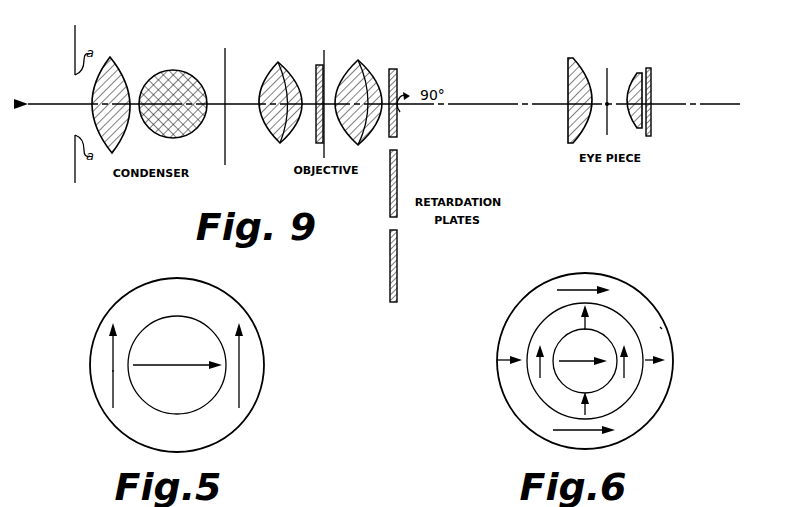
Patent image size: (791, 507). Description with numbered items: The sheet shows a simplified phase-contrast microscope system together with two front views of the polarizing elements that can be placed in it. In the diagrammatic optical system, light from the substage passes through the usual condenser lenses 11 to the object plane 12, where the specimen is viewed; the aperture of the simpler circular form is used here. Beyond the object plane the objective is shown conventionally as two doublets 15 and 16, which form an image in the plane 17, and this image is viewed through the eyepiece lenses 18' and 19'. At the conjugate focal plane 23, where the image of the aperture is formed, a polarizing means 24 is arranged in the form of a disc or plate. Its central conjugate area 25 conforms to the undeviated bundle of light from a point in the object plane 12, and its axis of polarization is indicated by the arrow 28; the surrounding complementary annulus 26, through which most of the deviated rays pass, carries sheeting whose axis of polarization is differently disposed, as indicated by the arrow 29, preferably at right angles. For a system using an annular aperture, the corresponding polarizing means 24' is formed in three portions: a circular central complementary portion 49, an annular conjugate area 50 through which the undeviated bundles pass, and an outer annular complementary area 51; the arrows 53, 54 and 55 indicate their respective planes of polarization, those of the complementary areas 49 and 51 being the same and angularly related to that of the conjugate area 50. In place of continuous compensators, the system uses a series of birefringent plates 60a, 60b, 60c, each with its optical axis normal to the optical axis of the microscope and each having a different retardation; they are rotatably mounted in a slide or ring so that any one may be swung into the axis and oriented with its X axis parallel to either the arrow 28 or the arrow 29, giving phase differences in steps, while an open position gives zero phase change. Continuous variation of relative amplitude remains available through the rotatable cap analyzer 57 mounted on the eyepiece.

In FIG. 9, the condenser lenses 11 is at (165, 70).
In FIG. 9, the object plane 12 is at (226, 50).
In FIG. 9, the doublet 15 is at (275, 62).
In FIG. 9, the doublet 16 is at (358, 60).
In FIG. 9, the image plane 17 is at (607, 68).
In FIG. 9, the eyepiece lens 18' is at (575, 83).
In FIG. 9, the eyepiece lens 19' is at (636, 81).
In FIG. 9, the conjugate focal plane 23 is at (324, 152).
In FIG. 9, the polarizing means 24 is at (326, 81).
In FIG. 5, the polarizing means 24' is at (190, 366).
In FIG. 6, the polarizing means 24' is at (608, 361).
In FIG. 5, the central conjugate area 25 is at (190, 327).
In FIG. 5, the complementary area 26 is at (157, 290).
In FIG. 5, the axis of polarization arrow 28 is at (165, 367).
In FIG. 5, the axis of polarization arrow 29 is at (113, 365).
In FIG. 6, the central complementary portion 49 is at (592, 340).
In FIG. 6, the annular conjugate area 50 is at (616, 330).
In FIG. 6, the annular complementary area 51 is at (656, 327).
In FIG. 6, the plane of polarization arrow 53 is at (572, 361).
In FIG. 6, the plane of polarization arrow 54 is at (580, 320).
In FIG. 6, the plane of polarization arrow 55 is at (578, 290).
In FIG. 9, the rotatable cap analyzer 57 is at (651, 70).
In FIG. 9, the birefringent plate 60a is at (398, 72).
In FIG. 9, the birefringent plate 60b is at (398, 182).
In FIG. 9, the birefringent plate 60c is at (398, 268).